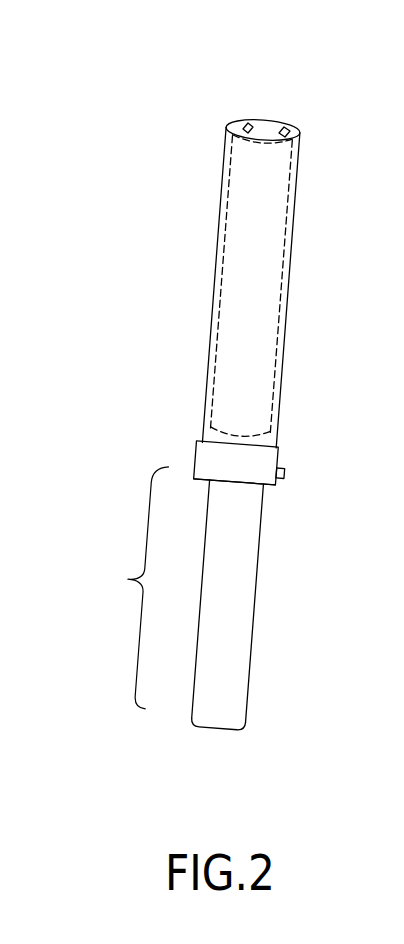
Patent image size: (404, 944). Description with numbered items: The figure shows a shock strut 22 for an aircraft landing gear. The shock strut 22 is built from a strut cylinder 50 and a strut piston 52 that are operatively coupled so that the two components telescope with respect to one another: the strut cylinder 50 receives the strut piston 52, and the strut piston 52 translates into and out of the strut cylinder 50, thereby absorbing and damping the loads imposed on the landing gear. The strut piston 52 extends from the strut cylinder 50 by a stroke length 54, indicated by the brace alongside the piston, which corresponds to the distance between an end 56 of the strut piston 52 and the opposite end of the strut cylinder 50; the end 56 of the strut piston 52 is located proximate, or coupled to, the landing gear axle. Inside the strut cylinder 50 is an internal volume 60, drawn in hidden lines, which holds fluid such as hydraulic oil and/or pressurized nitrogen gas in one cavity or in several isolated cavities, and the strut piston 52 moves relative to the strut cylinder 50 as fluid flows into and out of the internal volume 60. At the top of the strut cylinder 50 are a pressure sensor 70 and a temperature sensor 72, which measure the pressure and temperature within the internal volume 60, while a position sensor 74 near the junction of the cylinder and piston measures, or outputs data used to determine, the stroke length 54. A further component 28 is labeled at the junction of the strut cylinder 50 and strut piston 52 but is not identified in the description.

The shock strut 22 is at (155, 115).
The strut cylinder 50 is at (296, 222).
The internal volume 60 is at (222, 267).
The pressure sensor 70 is at (247, 123).
The temperature sensor 72 is at (285, 127).
The position sensor 74 is at (283, 471).
The handle 28 is at (243, 488).
The strut piston 52 is at (242, 640).
The stroke length 54 is at (128, 587).
The end of strut piston 56 is at (210, 733).